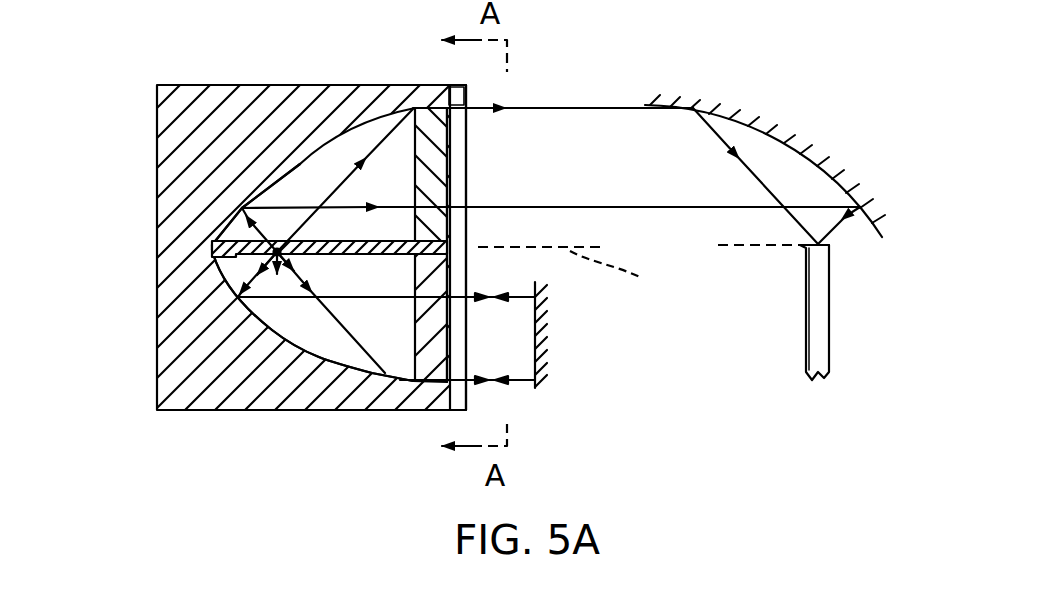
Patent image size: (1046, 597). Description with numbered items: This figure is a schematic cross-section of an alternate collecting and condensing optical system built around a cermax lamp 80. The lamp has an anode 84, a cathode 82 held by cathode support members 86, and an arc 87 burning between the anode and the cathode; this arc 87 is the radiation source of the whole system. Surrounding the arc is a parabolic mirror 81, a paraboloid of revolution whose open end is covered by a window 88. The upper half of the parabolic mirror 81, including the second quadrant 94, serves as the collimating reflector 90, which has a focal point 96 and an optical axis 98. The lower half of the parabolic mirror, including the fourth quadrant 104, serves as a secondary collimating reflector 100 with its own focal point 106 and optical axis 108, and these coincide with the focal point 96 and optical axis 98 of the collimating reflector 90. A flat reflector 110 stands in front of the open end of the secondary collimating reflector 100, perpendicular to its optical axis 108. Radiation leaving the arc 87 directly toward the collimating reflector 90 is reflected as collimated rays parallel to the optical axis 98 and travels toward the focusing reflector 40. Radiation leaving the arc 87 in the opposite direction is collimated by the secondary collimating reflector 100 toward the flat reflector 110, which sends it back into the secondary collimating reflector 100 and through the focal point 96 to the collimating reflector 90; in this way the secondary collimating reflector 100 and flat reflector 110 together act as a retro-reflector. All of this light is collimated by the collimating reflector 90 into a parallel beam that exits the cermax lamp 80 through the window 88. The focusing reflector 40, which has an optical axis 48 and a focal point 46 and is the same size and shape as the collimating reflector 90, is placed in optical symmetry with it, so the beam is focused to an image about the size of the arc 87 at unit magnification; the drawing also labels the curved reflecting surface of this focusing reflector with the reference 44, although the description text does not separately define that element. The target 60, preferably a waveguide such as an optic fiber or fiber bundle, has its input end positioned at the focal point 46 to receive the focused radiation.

The focusing reflector 40 is at (754, 123).
The curved mirror 44 is at (773, 124).
The focal point 46 is at (804, 248).
The optical axis 48 is at (737, 248).
The target 60 is at (832, 318).
The cermax lamp 80 is at (156, 411).
The parabolic mirror 81 is at (211, 261).
The cathode 82 is at (348, 241).
The anode 84 is at (242, 208).
The cathode support members 86 is at (427, 287).
The arc 87 is at (280, 268).
The window 88 is at (467, 169).
The collimating reflector 90 is at (352, 128).
The second quadrant 94 is at (346, 128).
The focal point 96 is at (278, 246).
The optical axis 98 is at (614, 279).
The secondary collimating reflector 100 is at (360, 356).
The fourth quadrant 104 is at (313, 353).
The focal point 106 is at (290, 257).
The optical axis 108 is at (556, 251).
The flat reflector 110 is at (535, 347).